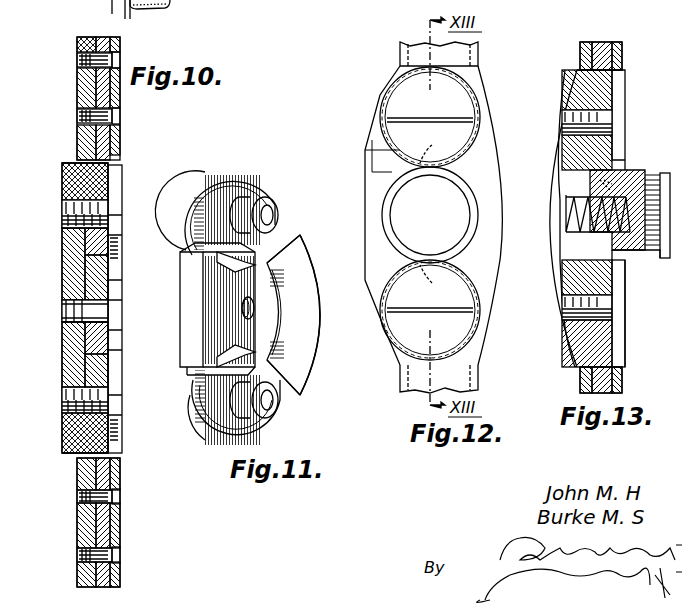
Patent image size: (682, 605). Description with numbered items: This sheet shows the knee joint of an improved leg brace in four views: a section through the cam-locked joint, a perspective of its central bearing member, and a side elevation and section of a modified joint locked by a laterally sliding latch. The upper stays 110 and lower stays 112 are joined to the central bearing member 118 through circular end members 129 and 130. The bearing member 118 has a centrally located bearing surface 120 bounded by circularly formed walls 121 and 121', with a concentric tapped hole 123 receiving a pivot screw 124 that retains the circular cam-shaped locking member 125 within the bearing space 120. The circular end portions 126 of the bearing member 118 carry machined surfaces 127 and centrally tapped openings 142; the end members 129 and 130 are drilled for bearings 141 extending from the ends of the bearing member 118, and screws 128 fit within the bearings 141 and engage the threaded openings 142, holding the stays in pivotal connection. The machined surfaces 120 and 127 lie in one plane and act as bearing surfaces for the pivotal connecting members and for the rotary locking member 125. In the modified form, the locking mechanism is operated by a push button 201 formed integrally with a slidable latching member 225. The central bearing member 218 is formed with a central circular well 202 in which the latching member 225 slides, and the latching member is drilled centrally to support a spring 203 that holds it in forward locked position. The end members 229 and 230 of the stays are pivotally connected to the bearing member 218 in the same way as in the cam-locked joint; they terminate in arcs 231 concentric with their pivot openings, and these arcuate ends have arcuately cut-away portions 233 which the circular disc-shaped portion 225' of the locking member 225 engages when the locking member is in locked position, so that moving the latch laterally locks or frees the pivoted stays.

In FIG. 10, the upper stays 110 is at (120, 137).
In FIG. 10, the lower stays 112 is at (120, 580).
In FIG. 10, the central bearing member 118 is at (70, 266).
In FIG. 11, the central bearing member 118 is at (310, 362).
In FIG. 10, the bearing surface 120 is at (82, 336).
In FIG. 11, the bearing surface 120 is at (222, 318).
In FIG. 11, the circularly formed wall 121 is at (314, 315).
In FIG. 11, the circularly formed wall 121' is at (244, 309).
In FIG. 10, the tapped hole 123 is at (72, 286).
In FIG. 11, the tapped hole 123 is at (242, 308).
In FIG. 10, the pivot screw 124 is at (66, 304).
In FIG. 10, the cam-shaped locking member 125 is at (100, 277).
In FIG. 10, the end portions 126 is at (82, 158).
In FIG. 11, the end portions 126 is at (250, 176).
In FIG. 10, the machined surfaces 127 is at (82, 167).
In FIG. 11, the machined surfaces 127 is at (237, 172).
In FIG. 10, the screws 128 is at (66, 205).
In FIG. 10, the end member 129 is at (66, 180).
In FIG. 10, the end member 130 is at (100, 530).
In FIG. 10, the bearings 141 is at (110, 192).
In FIG. 11, the bearings 141 is at (276, 205).
In FIG. 10, the tapped openings 142 is at (66, 238).
In FIG. 11, the tapped openings 142 is at (270, 215).
In FIG. 12, the push button 201 is at (430, 215).
In FIG. 13, the push button 201 is at (668, 175).
In FIG. 12, the central circular well 202 is at (382, 190).
In FIG. 13, the central circular well 202 is at (568, 272).
In FIG. 13, the spring 203 is at (570, 210).
In FIG. 12, the central bearing member 218 is at (366, 244).
In FIG. 13, the central bearing member 218 is at (540, 258).
In FIG. 12, the latching member 225 is at (458, 214).
In FIG. 13, the latching member 225 is at (629, 172).
In FIG. 12, the circular disc-shaped portion 225' is at (364, 152).
In FIG. 13, the circular disc-shaped portion 225' is at (564, 120).
In FIG. 12, the end member 229 is at (476, 76).
In FIG. 13, the end member 229 is at (600, 44).
In FIG. 12, the end member 230 is at (470, 363).
In FIG. 13, the end member 230 is at (618, 372).
In FIG. 12, the arcs 231 is at (378, 118).
In FIG. 12, the cut-away portions 233 is at (430, 213).